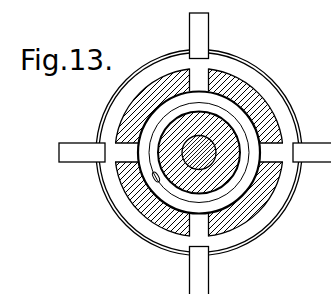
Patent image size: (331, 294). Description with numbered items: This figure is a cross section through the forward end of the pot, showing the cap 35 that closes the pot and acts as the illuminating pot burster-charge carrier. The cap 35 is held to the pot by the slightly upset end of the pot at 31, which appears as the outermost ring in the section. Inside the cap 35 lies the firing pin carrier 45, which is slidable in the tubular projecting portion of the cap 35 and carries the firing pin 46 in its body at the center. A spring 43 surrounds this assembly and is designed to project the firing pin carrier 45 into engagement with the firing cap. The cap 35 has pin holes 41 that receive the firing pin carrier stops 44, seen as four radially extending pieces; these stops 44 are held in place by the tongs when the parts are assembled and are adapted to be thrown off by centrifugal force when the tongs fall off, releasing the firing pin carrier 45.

The upset end of the pot 31 is at (261, 66).
The cap 35 is at (264, 98).
The pin holes 41 is at (278, 150).
The spring 43 is at (131, 214).
The firing pin carrier stops 44 is at (195, 42).
The firing pin carrier 45 is at (122, 167).
The firing pin 46 is at (181, 148).